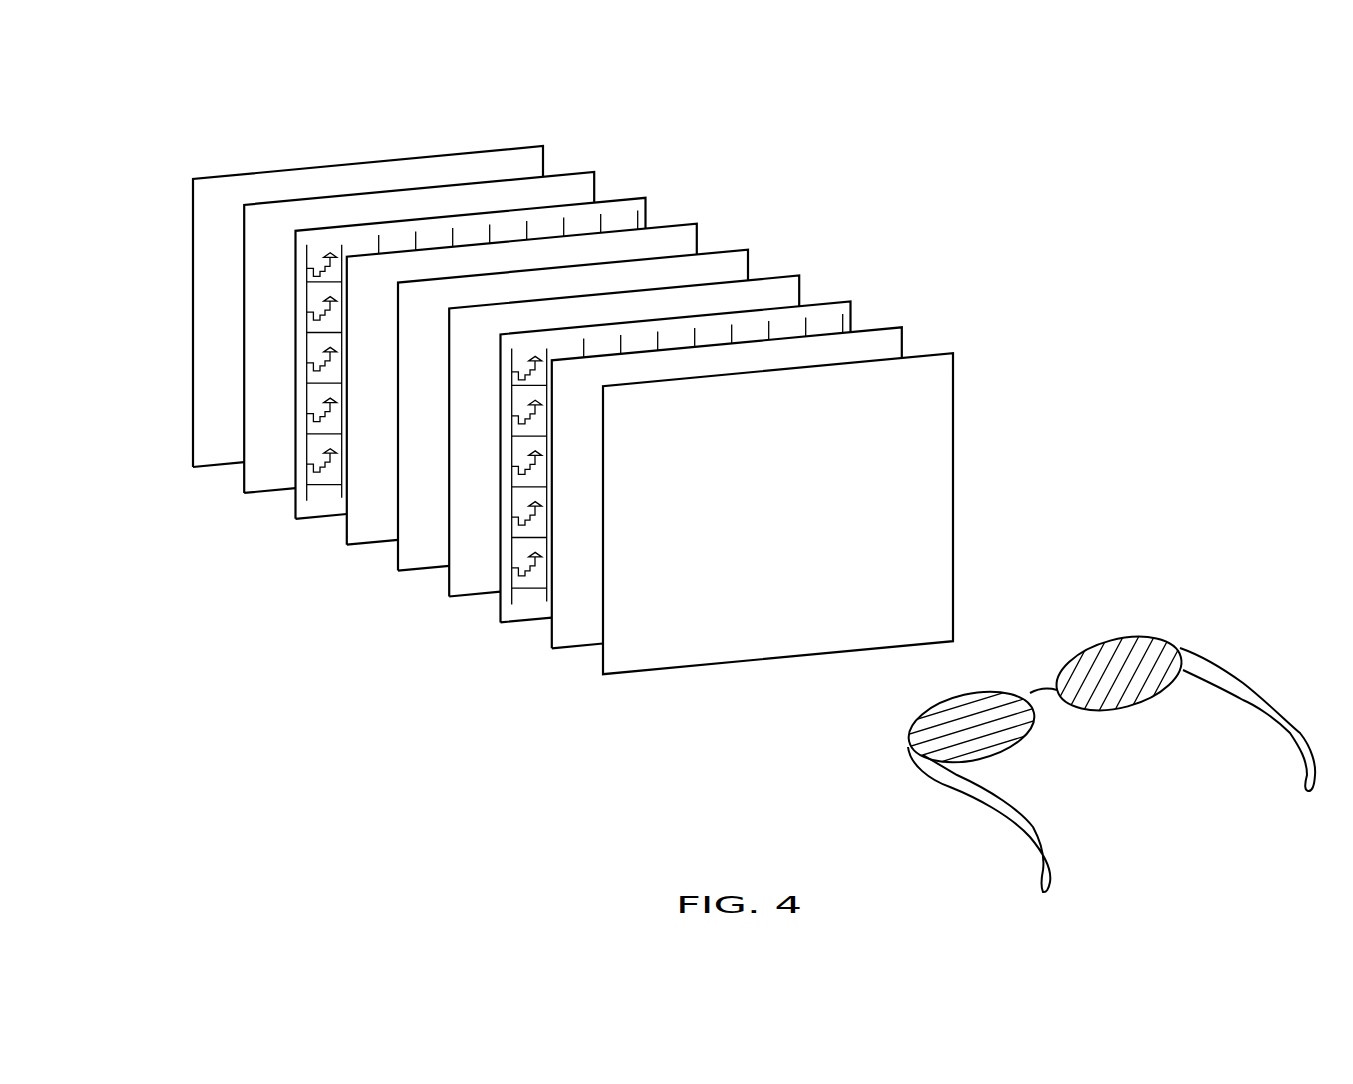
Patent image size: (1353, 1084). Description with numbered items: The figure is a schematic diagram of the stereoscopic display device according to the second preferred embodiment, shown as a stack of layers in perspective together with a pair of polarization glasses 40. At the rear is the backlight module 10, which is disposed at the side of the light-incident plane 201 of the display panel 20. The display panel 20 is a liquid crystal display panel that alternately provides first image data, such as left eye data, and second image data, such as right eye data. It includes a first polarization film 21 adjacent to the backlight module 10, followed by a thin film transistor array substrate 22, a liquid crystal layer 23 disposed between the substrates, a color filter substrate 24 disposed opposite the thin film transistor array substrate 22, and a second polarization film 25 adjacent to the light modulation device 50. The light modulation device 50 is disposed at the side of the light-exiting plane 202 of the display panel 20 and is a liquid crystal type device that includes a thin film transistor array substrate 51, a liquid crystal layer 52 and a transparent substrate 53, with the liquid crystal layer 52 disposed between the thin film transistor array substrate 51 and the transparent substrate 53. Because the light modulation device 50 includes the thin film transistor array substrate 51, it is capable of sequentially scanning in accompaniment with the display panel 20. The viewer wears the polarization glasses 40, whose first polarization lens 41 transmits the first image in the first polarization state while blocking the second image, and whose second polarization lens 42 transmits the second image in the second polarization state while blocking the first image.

The backlight module 10 is at (543, 146).
The display panel 20 is at (870, 67).
The first polarization film 21 is at (594, 173).
The thin film transistor array substrate 22 is at (644, 199).
The liquid crystal layer 23 is at (696, 225).
The color filter substrate 24 is at (747, 251).
The second polarization film 25 is at (798, 276).
The light-incident plane 201 is at (240, 471).
The light-exiting plane 202 is at (465, 580).
The light modulation device 50 is at (1033, 232).
The thin film transistor array substrate 51 is at (851, 302).
The liquid crystal layer 52 is at (902, 328).
The transparent substrate 53 is at (953, 353).
The polarization glasses 40 is at (1104, 706).
The first polarization lens 41 is at (973, 692).
The second polarization lens 42 is at (1125, 638).